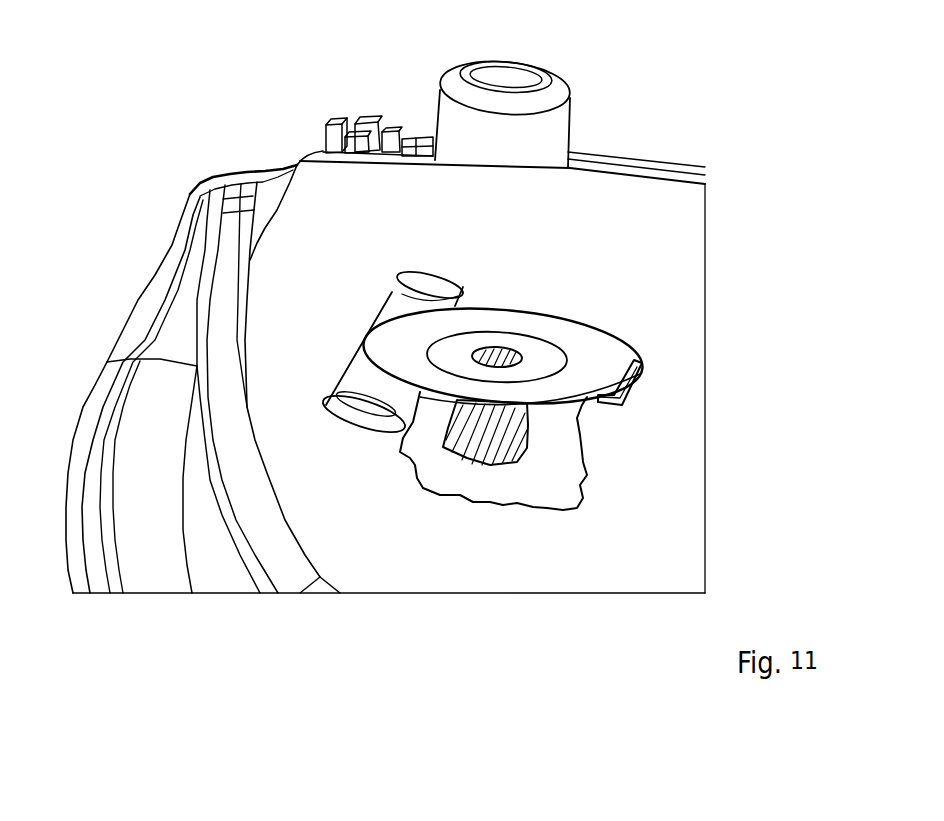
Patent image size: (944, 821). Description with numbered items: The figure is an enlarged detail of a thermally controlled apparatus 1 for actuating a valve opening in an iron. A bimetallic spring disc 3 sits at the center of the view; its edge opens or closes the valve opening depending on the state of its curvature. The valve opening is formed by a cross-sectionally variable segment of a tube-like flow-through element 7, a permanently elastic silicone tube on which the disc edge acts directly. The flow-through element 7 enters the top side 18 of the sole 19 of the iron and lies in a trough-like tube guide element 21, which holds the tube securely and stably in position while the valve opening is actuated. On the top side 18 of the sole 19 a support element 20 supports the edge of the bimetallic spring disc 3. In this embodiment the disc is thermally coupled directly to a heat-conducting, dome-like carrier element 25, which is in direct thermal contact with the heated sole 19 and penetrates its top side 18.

The thermally controlled apparatus 1 is at (473, 273).
The bimetallic spring disc 3 is at (597, 347).
The flow-through element 7 is at (363, 377).
The top side 18 is at (648, 245).
The sole 19 is at (231, 345).
The support element 20 is at (622, 393).
The tube guide element 21 is at (407, 272).
The carrier element 25 is at (507, 455).